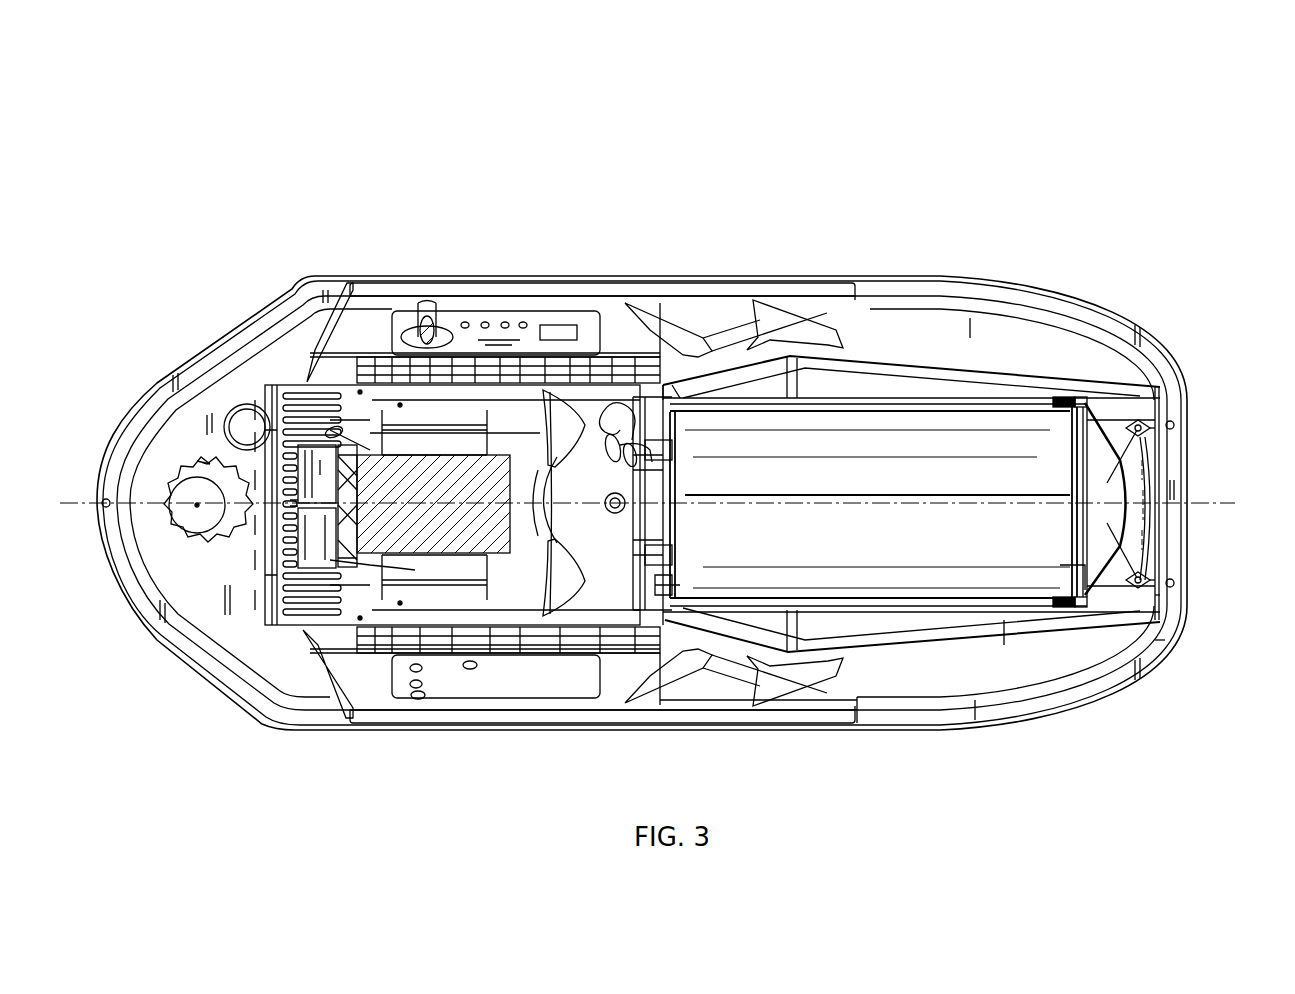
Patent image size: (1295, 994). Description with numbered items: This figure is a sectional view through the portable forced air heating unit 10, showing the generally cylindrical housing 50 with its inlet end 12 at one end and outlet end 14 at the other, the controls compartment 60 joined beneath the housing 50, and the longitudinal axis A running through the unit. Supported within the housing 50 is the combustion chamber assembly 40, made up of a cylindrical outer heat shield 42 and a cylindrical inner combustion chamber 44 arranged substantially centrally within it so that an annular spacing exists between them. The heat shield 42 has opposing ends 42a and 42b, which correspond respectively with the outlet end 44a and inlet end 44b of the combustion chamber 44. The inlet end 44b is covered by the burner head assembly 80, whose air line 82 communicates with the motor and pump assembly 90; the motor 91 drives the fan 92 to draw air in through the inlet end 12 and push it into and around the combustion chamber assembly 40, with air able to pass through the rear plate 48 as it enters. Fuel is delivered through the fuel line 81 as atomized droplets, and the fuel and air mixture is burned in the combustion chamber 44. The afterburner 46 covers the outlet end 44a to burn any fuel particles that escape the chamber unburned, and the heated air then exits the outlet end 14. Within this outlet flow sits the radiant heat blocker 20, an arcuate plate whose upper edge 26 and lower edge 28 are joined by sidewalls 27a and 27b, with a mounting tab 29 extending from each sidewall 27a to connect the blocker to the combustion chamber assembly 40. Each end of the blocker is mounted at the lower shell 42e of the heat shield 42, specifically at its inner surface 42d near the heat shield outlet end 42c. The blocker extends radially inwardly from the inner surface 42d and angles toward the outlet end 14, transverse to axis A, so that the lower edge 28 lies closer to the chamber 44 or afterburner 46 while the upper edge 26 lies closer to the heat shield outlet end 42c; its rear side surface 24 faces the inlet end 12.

The portable forced air heating unit 10 is at (170, 150).
The inlet end 12 is at (220, 451).
The outlet end 14 is at (1202, 425).
The radiant heat blocker 20 is at (1175, 593).
The rear side surface 24 is at (1147, 497).
The upper edge 26 is at (1170, 557).
The sidewall 27a is at (1140, 483).
The sidewall 27b is at (1197, 428).
The lower edge 28 is at (1075, 575).
The mounting tab 29 is at (1137, 422).
The combustion chamber assembly 40 is at (825, 380).
The heat shield 42 is at (938, 397).
The heat shield end 42a is at (1141, 405).
The heat shield end 42b is at (685, 398).
The heat shield outlet end 42c is at (1160, 598).
The heat shield inner surface 42d is at (1135, 585).
The lower shell of heat shield 42e is at (1162, 648).
The combustion chamber 44 is at (852, 417).
The combustion chamber outlet end 44a is at (1057, 420).
The combustion chamber inlet end 44b is at (708, 435).
The afterburner 46 is at (1107, 485).
The rear plate 48 is at (666, 585).
The housing 50 is at (985, 630).
The controls compartment 60 is at (370, 365).
The burner head assembly 80 is at (645, 412).
The fuel line 81 is at (545, 390).
The air line 82 is at (605, 430).
The motor and pump assembly 90 is at (457, 410).
The motor 91 is at (415, 450).
The fan 92 is at (555, 600).
The longitudinal axis A is at (1231, 516).